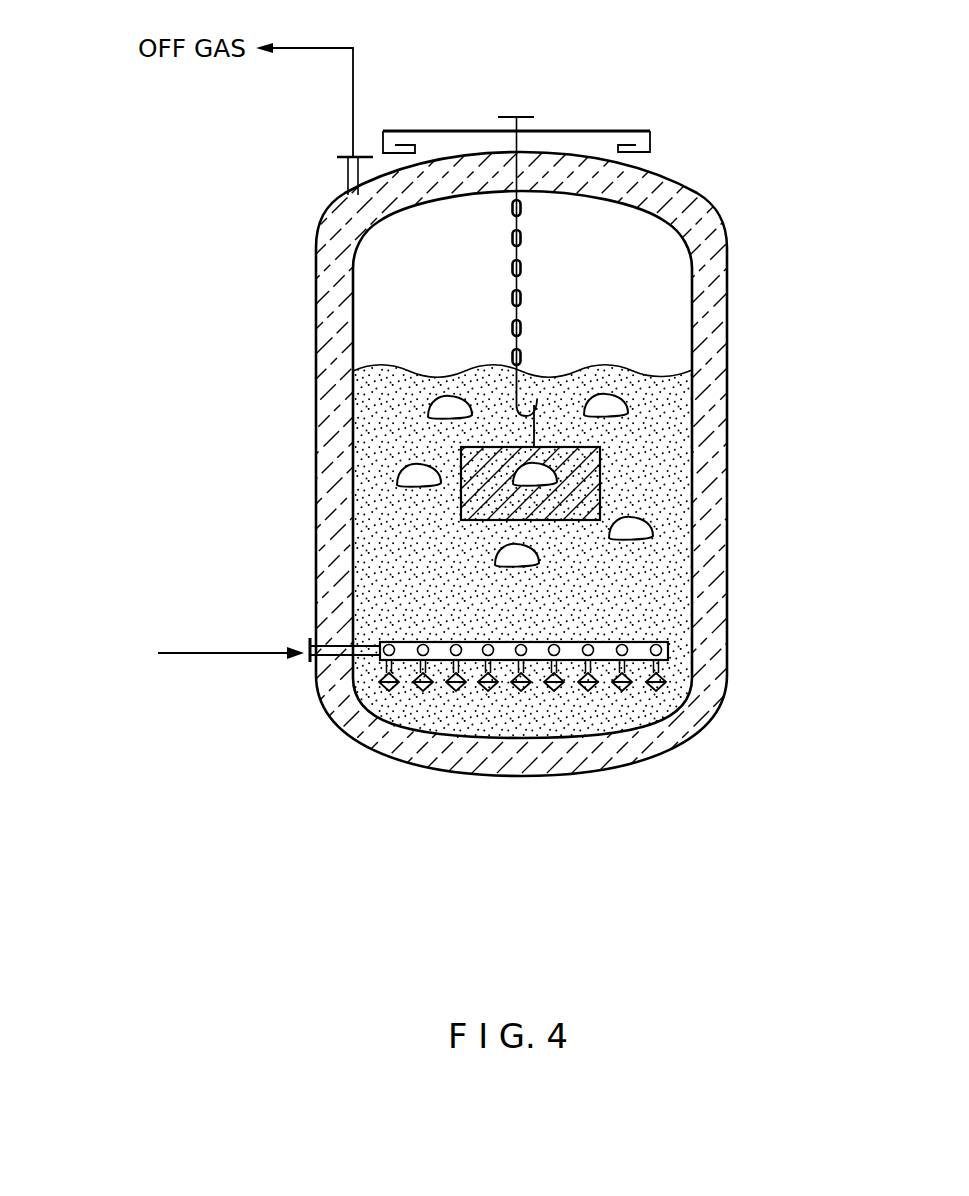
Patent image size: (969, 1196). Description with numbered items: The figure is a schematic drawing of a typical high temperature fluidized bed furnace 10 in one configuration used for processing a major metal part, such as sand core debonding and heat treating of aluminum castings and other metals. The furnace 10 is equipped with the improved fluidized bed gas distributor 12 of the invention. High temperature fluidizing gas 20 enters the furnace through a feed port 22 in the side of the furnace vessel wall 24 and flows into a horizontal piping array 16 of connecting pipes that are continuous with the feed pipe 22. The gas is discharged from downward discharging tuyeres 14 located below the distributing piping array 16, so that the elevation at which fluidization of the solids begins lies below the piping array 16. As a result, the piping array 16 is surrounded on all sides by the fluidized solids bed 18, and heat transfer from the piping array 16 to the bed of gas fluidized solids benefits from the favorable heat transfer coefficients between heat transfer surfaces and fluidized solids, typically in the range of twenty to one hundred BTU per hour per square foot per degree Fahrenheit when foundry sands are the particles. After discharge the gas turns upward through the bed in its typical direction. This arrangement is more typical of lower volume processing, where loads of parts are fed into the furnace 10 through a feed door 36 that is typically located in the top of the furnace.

The high temperature fluidized bed furnace 10 is at (716, 772).
The fluidized bed gas distributor 12 is at (669, 646).
The downward discharging tuyere 14 is at (583, 677).
The piping array 16 is at (596, 641).
The fluidized solids bed 18 is at (396, 505).
The high temperature fluidizing gas 20 is at (166, 626).
The feed port 22 is at (308, 644).
The furnace vessel wall 24 is at (322, 664).
The feed door 36 is at (578, 131).